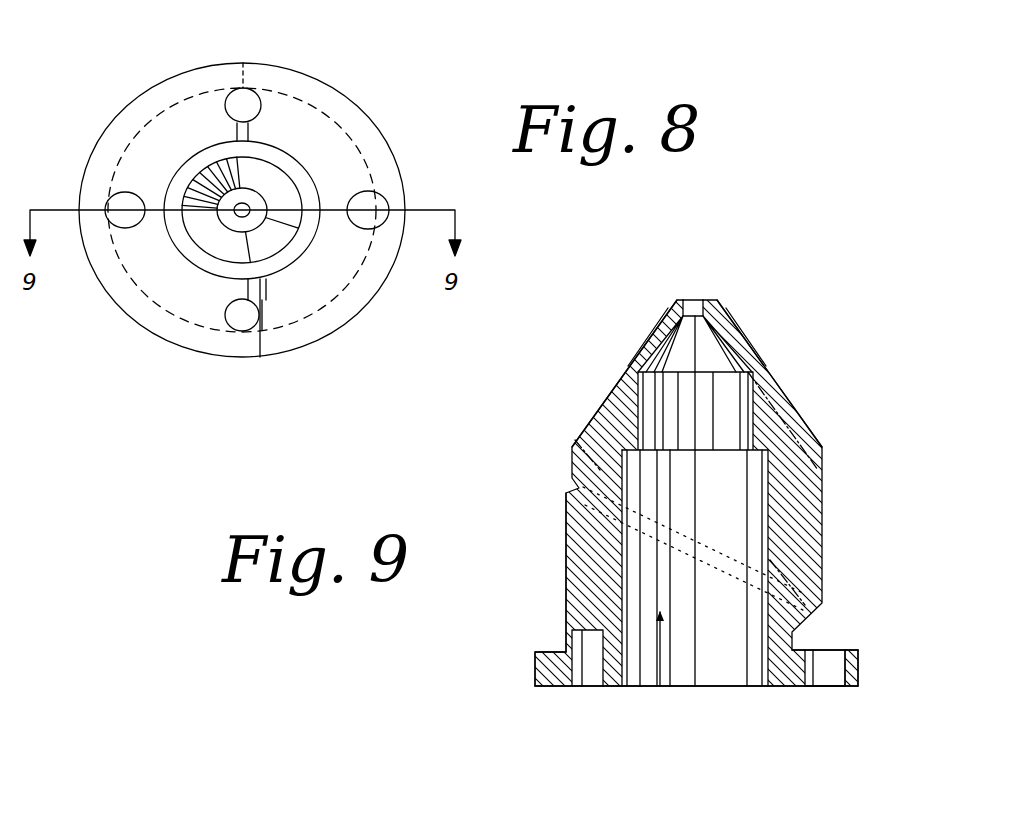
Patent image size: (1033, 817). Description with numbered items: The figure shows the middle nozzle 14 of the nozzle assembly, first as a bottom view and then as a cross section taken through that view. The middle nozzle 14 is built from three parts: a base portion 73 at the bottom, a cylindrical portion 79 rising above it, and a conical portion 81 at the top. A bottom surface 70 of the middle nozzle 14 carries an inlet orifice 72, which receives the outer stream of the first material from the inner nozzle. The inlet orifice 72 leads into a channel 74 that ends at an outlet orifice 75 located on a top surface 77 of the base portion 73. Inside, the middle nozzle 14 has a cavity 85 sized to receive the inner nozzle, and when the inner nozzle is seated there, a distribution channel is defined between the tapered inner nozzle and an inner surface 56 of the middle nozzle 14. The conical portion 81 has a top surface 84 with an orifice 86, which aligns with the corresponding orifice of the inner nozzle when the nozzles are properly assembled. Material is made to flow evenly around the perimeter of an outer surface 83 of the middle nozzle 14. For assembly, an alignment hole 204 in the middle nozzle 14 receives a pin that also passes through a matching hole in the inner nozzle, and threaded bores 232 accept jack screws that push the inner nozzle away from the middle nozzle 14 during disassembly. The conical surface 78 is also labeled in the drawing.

In FIG. 8, the middle nozzle 14 is at (380, 110).
In FIG. 9, the middle nozzle 14 is at (765, 358).
In FIG. 9, the inner surface 56 is at (636, 357).
In FIG. 9, the bottom surface 70 is at (550, 686).
In FIG. 9, the inlet orifice 72 is at (825, 688).
In FIG. 8, the base portion 73 is at (103, 134).
In FIG. 9, the base portion 73 is at (535, 657).
In FIG. 9, the channel 74 is at (840, 664).
In FIG. 8, the outlet orifice 75 is at (366, 210).
In FIG. 9, the outlet orifice 75 is at (827, 648).
In FIG. 9, the top surface 77 is at (860, 656).
In FIG. 9, the conical surface 78 is at (793, 405).
In FIG. 9, the cylindrical portion 79 is at (580, 562).
In FIG. 8, the conical portion 81 is at (208, 237).
In FIG. 9, the conical portion 81 is at (595, 424).
In FIG. 9, the outer surface 83 is at (617, 383).
In FIG. 9, the top surface 84 is at (683, 298).
In FIG. 9, the cavity 85 is at (660, 686).
In FIG. 8, the orifice 86 is at (248, 206).
In FIG. 9, the orifice 86 is at (698, 298).
In FIG. 8, the alignment hole 204 is at (125, 208).
In FIG. 9, the alignment hole 204 is at (590, 668).
In FIG. 8, the threaded bores 232 is at (243, 108).